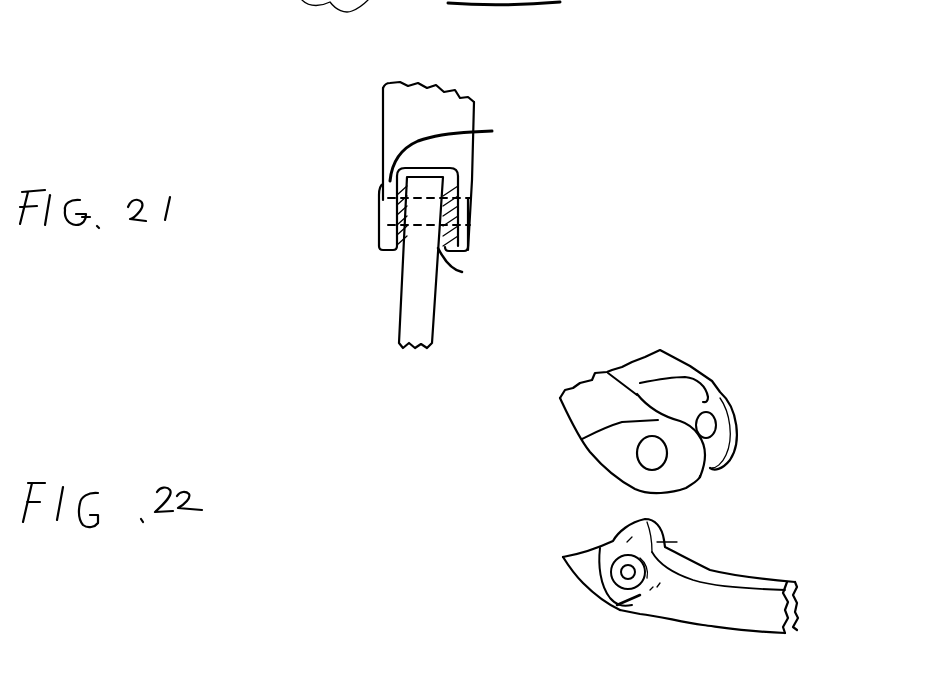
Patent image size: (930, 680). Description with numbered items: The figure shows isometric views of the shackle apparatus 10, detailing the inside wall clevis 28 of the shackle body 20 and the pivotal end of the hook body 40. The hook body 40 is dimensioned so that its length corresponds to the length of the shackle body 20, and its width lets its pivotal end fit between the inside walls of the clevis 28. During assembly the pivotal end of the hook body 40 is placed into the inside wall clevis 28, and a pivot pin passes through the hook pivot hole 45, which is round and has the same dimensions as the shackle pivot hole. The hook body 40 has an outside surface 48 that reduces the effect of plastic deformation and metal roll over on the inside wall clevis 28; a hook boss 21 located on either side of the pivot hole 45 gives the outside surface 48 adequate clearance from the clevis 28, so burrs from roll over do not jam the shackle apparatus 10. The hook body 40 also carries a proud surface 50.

In FIG. 21, the shackle apparatus 10 is at (276, 67).
In FIG. 21, the shackle body 20 is at (402, 115).
In FIG. 22, the shackle body 20 is at (766, 295).
In FIG. 21, the hook boss 21 is at (446, 213).
In FIG. 21, the inside wall clevis 28 is at (492, 131).
In FIG. 22, the inside wall clevis 28 is at (712, 393).
In FIG. 21, the hook body 40 is at (412, 293).
In FIG. 22, the hook body 40 is at (502, 525).
In FIG. 21, the hook pivot hole 45 is at (383, 205).
In FIG. 21, the outside surface 48 is at (462, 272).
In FIG. 22, the outside surface 48 is at (563, 555).
In FIG. 22, the proud surface 50 is at (677, 542).